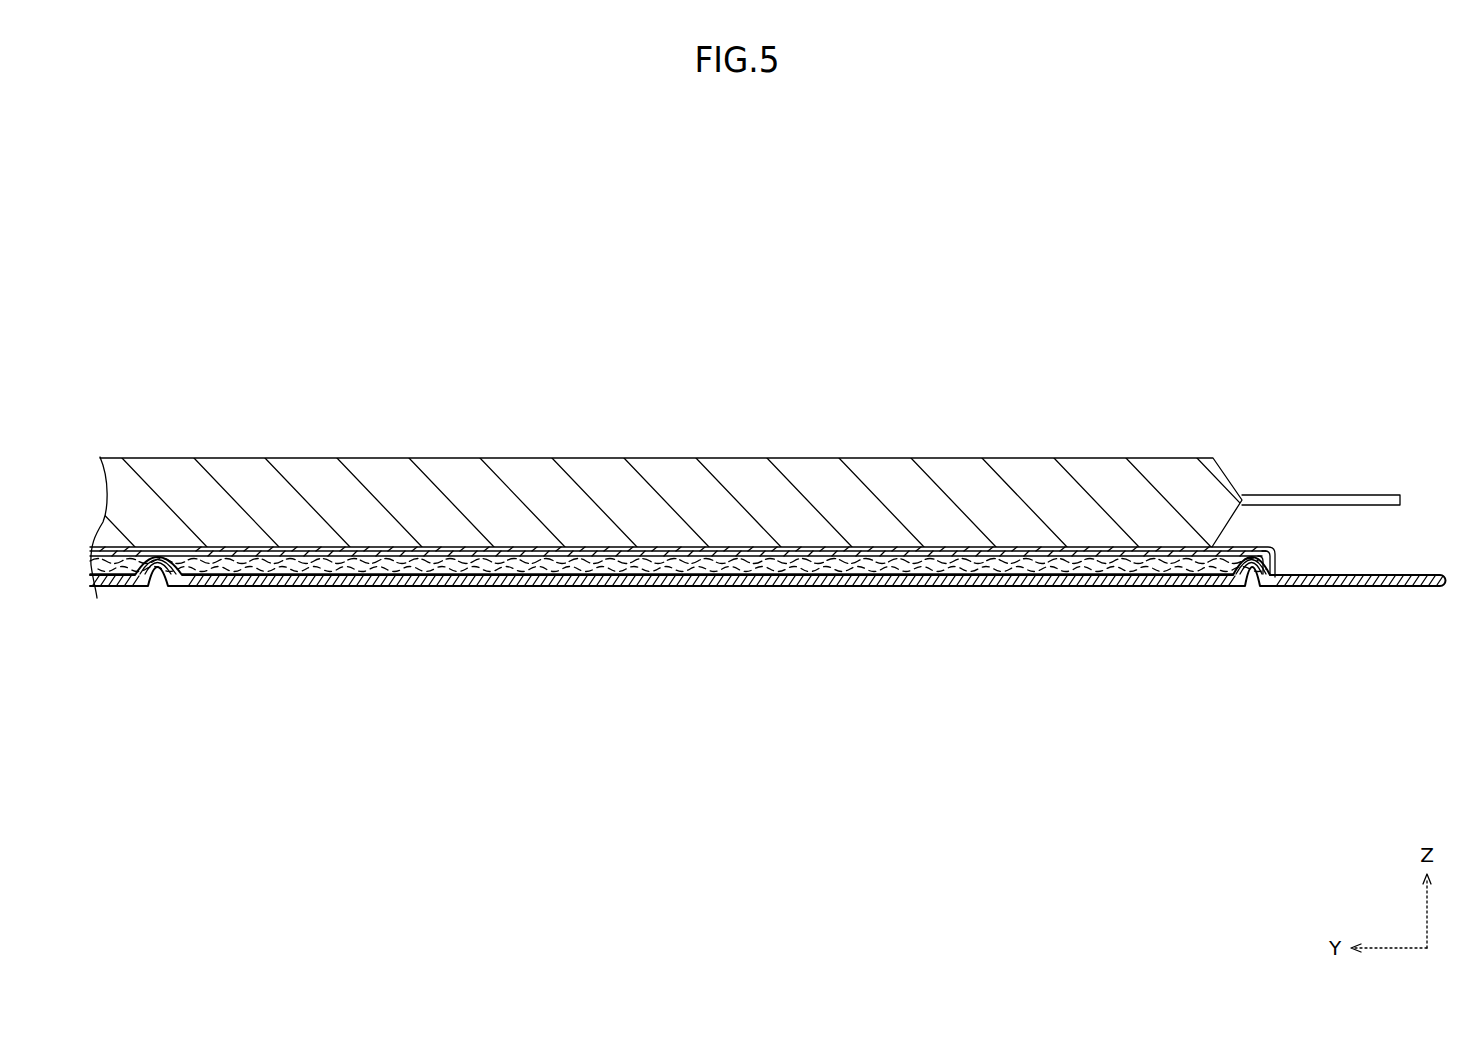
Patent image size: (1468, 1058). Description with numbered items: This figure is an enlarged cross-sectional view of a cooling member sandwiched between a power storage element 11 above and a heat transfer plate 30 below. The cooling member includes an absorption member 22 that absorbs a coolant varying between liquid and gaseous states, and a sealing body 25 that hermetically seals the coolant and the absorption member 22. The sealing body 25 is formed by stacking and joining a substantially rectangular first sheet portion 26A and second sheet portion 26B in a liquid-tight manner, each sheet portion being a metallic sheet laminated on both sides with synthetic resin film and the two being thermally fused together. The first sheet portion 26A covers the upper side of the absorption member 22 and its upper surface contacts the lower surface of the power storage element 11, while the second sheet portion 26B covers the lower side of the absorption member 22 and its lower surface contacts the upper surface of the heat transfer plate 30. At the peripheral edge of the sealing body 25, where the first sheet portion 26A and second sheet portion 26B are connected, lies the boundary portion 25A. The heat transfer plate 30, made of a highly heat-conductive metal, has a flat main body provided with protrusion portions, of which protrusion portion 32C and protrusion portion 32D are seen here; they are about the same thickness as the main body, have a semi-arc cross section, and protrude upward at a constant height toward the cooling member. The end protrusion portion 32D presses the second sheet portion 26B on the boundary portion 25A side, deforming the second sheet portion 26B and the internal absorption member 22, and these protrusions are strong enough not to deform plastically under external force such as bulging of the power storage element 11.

The power storage element 11 is at (890, 484).
The absorption member 22 is at (973, 577).
The sealing body 25 is at (812, 396).
The boundary portion 25A is at (1277, 558).
The first sheet portion 26A is at (694, 548).
The second sheet portion 26B is at (768, 578).
The heat transfer plate 30 is at (858, 584).
The protrusion portion 32C is at (157, 573).
The protrusion portion 32D is at (1252, 572).